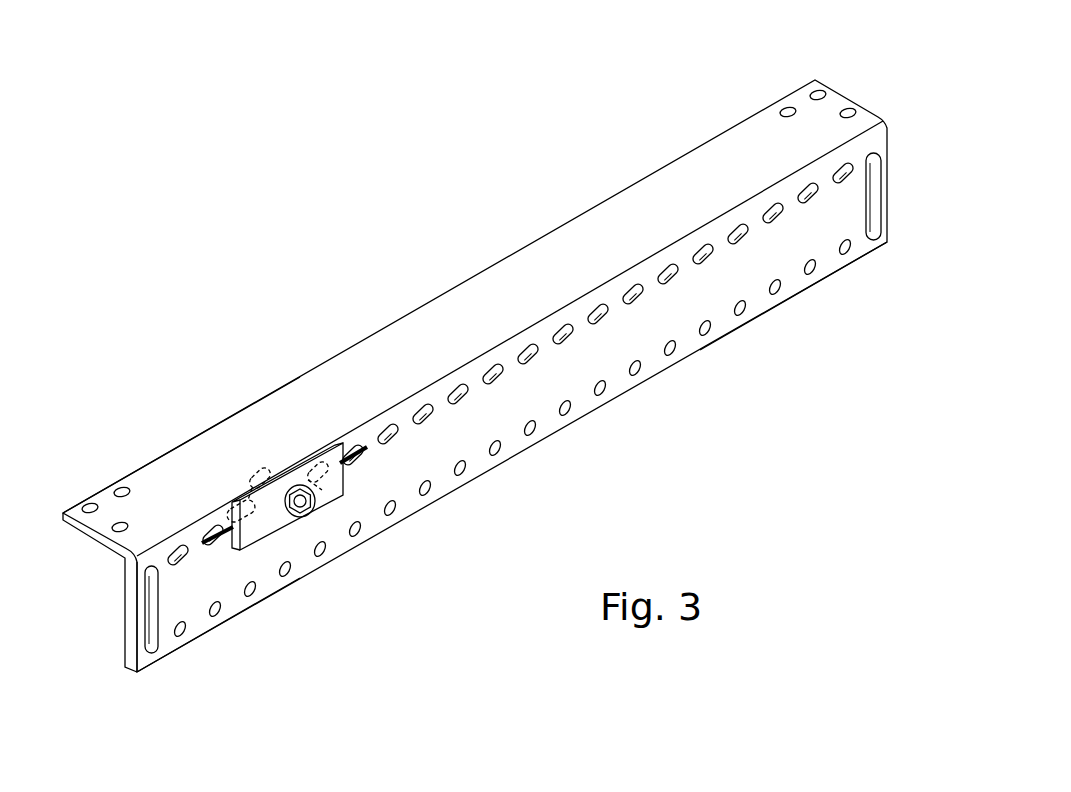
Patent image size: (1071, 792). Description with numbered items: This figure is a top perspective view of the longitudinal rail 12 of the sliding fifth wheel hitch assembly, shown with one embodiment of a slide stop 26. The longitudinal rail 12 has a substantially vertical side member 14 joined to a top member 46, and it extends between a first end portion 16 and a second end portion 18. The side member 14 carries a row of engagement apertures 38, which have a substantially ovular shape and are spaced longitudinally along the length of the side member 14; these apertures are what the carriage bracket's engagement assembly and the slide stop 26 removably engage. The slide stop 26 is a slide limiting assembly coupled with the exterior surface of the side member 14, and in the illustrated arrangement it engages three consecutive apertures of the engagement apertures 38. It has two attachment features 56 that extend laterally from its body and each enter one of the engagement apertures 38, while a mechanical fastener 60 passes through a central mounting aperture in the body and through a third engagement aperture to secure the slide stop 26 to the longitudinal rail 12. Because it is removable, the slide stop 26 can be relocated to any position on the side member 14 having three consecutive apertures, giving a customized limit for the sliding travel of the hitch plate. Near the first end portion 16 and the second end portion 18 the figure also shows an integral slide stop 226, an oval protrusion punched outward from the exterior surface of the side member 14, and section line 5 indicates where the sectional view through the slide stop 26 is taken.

The longitudinal rail 12 is at (498, 278).
The substantially vertical side member 14 is at (678, 305).
The top member 46 is at (625, 217).
The first end portion 16 is at (253, 676).
The second end portion 18 is at (831, 308).
The engagement apertures 38 is at (738, 228).
The slide stop 226 is at (150, 600).
The slide stop 26 is at (333, 453).
The mechanical fastener 60 is at (291, 492).
The attachment features 56 is at (238, 517).
The section line 5- 5 is at (366, 463).